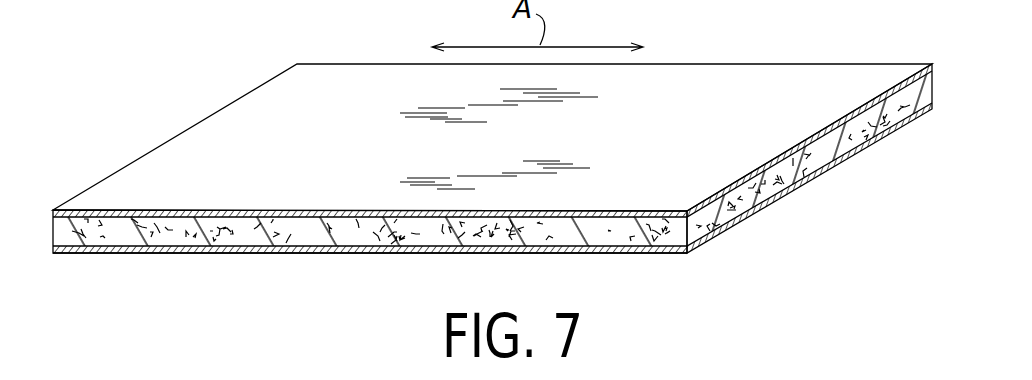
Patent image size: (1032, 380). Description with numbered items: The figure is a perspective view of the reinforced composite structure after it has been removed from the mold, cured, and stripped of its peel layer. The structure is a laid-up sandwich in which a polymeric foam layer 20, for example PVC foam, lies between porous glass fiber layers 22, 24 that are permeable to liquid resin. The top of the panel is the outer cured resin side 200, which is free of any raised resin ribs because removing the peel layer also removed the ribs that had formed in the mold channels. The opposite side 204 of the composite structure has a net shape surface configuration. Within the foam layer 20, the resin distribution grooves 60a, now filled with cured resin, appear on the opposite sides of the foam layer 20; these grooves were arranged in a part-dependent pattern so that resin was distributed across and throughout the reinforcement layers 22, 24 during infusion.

The outer cured resin side 200 is at (239, 82).
The upper glass fiber layer 22 is at (852, 136).
The glass fiber layer 24 is at (620, 259).
The opposite side 204 is at (200, 265).
The polymeric foam layer 20 is at (783, 191).
The resin distribution grooves 60a is at (803, 178).